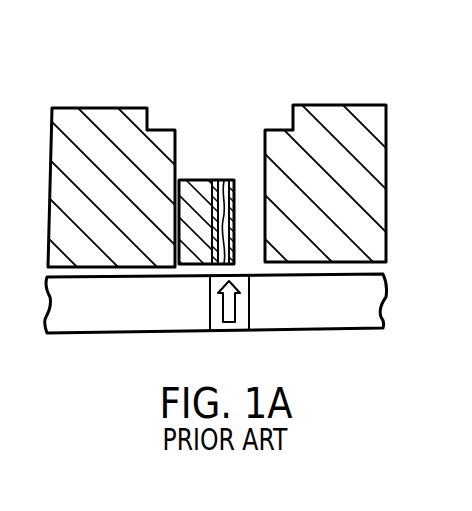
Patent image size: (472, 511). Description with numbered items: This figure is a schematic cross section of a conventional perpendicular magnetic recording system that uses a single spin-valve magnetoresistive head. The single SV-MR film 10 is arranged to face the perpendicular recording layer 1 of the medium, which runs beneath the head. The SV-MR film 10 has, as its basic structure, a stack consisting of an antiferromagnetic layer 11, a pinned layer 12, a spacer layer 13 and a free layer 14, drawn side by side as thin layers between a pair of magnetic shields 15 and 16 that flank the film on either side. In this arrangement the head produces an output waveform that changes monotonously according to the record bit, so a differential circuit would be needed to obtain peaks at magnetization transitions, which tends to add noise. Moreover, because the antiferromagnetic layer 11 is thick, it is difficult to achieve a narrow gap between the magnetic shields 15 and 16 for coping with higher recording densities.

The perpendicular recording layer 1 is at (346, 316).
The SV-MR film 10 is at (219, 157).
The antiferromagnetic layer 11 is at (197, 180).
The pinned layer 12 is at (216, 180).
The spacer layer 13 is at (227, 180).
The free layer 14 is at (243, 177).
The magnetic shield 15 is at (108, 112).
The magnetic shield 16 is at (340, 107).